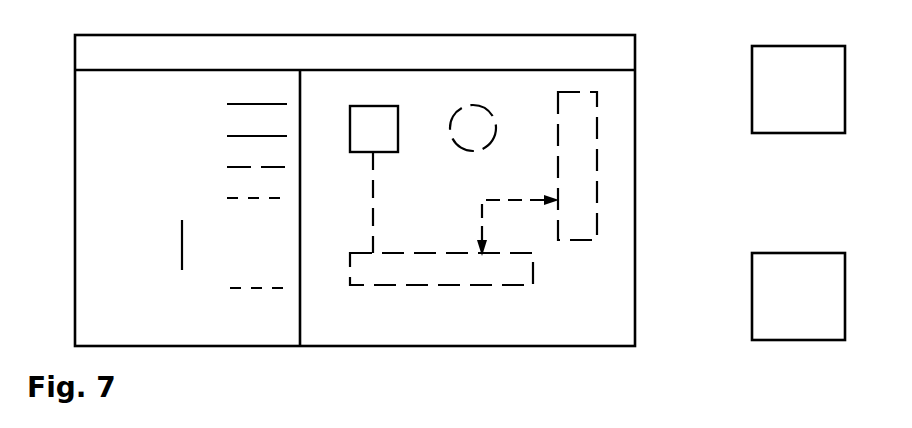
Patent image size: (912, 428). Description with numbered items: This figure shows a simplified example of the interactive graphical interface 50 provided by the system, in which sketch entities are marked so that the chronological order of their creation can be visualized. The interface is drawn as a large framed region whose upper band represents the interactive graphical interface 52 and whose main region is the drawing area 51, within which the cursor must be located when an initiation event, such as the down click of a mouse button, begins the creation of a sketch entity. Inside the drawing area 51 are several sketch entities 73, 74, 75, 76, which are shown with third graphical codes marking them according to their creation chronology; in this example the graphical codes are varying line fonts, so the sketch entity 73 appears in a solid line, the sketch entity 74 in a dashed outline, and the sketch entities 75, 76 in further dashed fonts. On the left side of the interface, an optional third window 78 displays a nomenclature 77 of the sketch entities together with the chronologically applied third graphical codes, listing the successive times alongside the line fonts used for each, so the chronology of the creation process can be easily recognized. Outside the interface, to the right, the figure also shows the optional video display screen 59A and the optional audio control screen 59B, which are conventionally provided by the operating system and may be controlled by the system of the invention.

The interactive graphical interface 50 is at (635, 120).
The drawing area 51 is at (613, 102).
The interactive graphical interface 52 is at (443, 34).
The video display screen 59A is at (775, 133).
The audio control screen 59B is at (775, 340).
The sketch entity 73 is at (368, 106).
The sketch entity 74 is at (475, 105).
The sketch entity 75 is at (417, 285).
The sketch entity 76 is at (573, 240).
The nomenclature 77 is at (72, 92).
The third window 78 is at (190, 347).